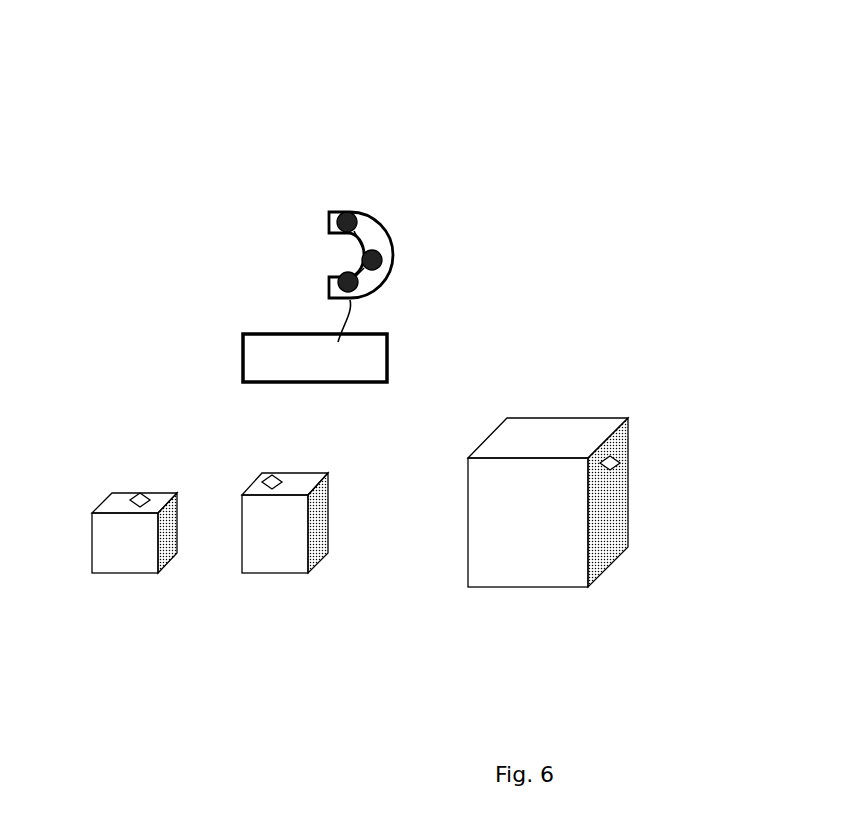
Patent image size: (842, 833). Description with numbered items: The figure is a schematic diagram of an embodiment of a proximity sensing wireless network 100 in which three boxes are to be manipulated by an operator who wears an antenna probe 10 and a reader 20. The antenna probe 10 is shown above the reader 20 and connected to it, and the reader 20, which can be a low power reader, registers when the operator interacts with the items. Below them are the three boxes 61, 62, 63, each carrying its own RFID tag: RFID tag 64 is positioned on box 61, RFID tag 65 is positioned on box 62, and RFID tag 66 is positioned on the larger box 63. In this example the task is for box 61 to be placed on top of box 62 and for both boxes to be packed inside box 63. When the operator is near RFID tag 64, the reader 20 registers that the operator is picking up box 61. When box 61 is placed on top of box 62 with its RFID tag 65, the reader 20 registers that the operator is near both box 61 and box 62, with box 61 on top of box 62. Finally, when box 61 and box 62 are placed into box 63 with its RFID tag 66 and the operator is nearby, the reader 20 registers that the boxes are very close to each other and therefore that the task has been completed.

The proximity sensing wireless network 100 is at (74, 28).
The antenna probe 10 is at (393, 250).
The reader 20 is at (393, 363).
The box 61 is at (128, 567).
The box 62 is at (278, 567).
The box 63 is at (475, 587).
The RFID tag 64 is at (140, 493).
The RFID tag 65 is at (265, 477).
The RFID tag 66 is at (620, 457).